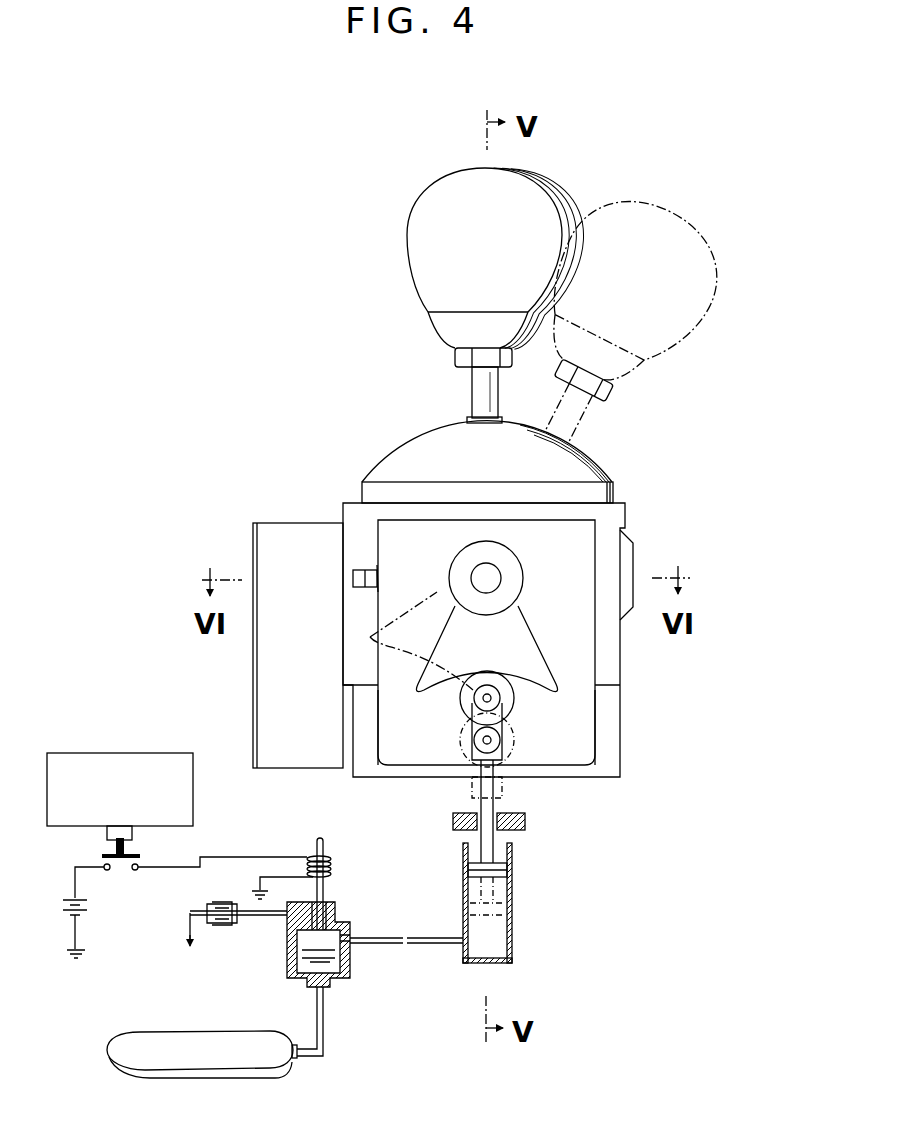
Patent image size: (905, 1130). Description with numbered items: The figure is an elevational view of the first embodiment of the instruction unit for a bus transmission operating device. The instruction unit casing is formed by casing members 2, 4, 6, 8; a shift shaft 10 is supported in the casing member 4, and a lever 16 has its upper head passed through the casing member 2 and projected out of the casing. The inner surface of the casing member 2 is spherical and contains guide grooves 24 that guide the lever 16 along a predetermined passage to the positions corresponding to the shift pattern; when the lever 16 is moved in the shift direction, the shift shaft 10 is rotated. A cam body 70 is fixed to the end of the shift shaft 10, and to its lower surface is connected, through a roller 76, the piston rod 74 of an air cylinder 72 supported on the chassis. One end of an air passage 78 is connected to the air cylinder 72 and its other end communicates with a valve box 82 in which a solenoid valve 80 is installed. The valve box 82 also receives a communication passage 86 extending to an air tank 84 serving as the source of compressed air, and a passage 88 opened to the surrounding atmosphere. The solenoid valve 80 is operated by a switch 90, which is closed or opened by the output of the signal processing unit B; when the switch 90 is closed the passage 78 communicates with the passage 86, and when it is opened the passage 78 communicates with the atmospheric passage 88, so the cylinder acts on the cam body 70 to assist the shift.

The casing member 2 is at (613, 492).
The casing member 4 is at (618, 645).
The casing member 6 is at (615, 686).
The casing member 8 is at (615, 728).
The shift shaft 10 is at (493, 573).
The lever 16 is at (473, 390).
The guide grooves 24 is at (420, 437).
The cam body 70 is at (527, 650).
The air cylinder 72 is at (513, 882).
The piston rod 74 is at (489, 805).
The roller 76 is at (510, 705).
The air passage 78 is at (378, 946).
The solenoid valve 80 is at (326, 893).
The valve box 82 is at (287, 967).
The air tank 84 is at (280, 1070).
The communication passage 86 is at (323, 1022).
The passage 88 is at (240, 919).
The switch 90 is at (142, 855).
The signal processing unit B is at (193, 793).